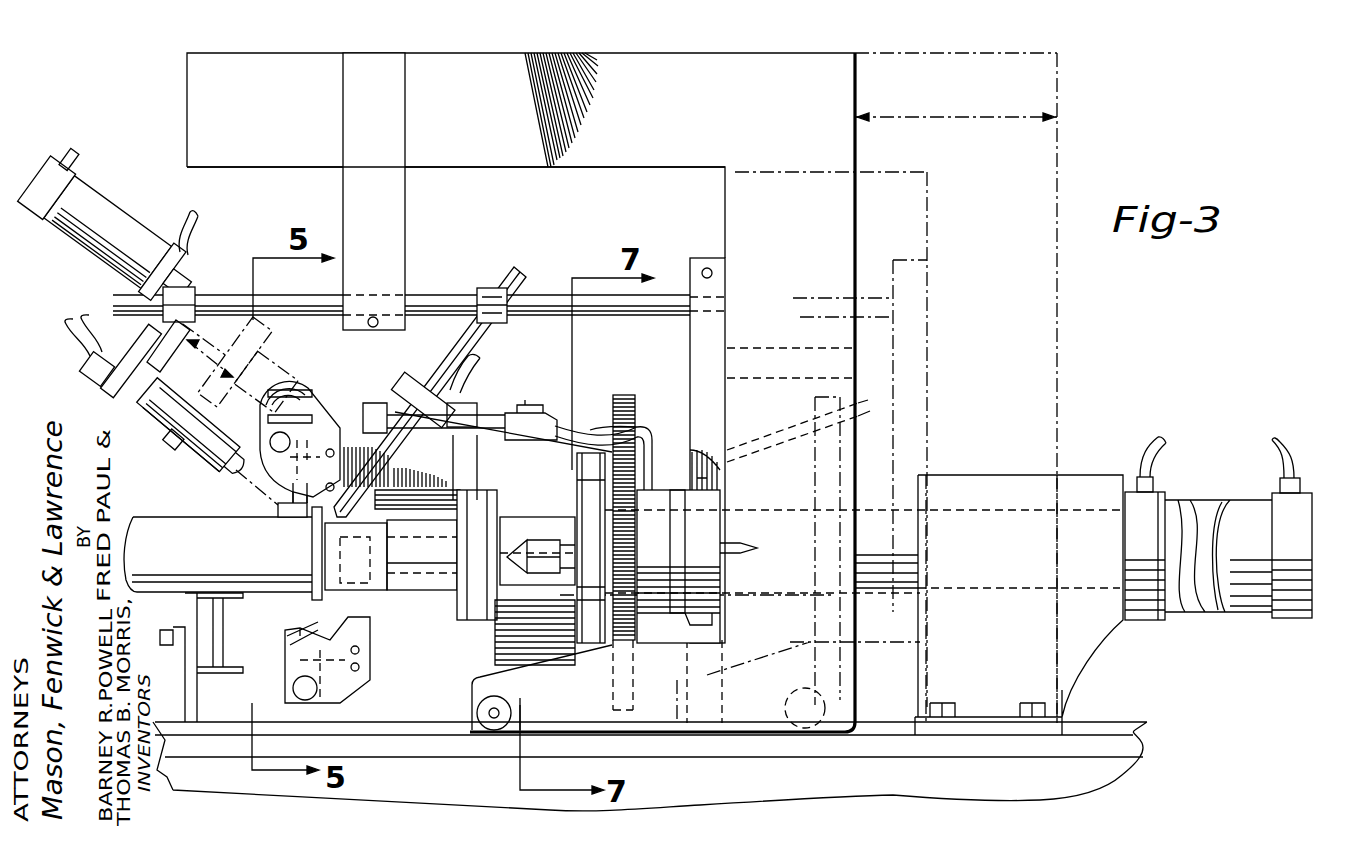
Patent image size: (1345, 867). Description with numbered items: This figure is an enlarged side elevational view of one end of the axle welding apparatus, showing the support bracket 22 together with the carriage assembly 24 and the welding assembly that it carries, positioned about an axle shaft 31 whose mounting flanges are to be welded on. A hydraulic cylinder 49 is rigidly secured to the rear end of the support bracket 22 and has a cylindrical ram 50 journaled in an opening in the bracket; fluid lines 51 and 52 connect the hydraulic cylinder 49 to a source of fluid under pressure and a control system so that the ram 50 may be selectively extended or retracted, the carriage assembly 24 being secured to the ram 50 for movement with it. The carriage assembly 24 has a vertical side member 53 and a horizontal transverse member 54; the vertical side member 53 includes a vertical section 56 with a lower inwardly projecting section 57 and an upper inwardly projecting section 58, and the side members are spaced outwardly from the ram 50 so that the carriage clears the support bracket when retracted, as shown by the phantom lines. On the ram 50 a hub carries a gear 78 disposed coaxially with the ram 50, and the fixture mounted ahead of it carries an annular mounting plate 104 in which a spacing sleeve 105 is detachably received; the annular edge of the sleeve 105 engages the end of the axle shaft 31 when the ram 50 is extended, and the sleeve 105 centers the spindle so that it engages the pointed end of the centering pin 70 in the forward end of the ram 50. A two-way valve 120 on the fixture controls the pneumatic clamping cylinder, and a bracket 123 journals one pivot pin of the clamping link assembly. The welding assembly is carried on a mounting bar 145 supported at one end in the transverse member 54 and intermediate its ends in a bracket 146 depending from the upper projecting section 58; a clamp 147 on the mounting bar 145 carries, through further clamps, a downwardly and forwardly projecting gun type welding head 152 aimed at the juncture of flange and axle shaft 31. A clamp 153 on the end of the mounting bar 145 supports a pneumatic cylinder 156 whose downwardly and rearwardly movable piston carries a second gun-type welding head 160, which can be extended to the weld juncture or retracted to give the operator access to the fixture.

The support bracket 22 is at (1085, 470).
The carriage assembly 24 is at (618, 40).
The axle shaft 31 is at (200, 517).
The hydraulic cylinder 49 is at (1243, 613).
The ram 50 is at (872, 508).
The fluid line 51 is at (1155, 458).
The fluid line 52 is at (1278, 452).
The vertical side member 53 is at (862, 362).
The horizontal transverse member 54 is at (688, 362).
The vertical section 56 is at (857, 54).
The lower inwardly projecting section 57 is at (663, 733).
The upper inwardly projecting section 58 is at (522, 158).
The centering pin 70 is at (540, 543).
The gear 78 is at (636, 412).
The annular mounting plate 104 is at (470, 605).
The spacing sleeve 105 is at (428, 575).
The two-way valve 120 is at (320, 414).
The bracket 123 is at (345, 688).
The mounting bar 145 is at (600, 316).
The bracket 146 is at (400, 236).
The clamp 147 is at (492, 288).
The gun type welding head 152 is at (402, 473).
The clamp 153 is at (190, 280).
The pneumatic cylinder 156 is at (98, 206).
The gun-type welding head 160 is at (152, 415).